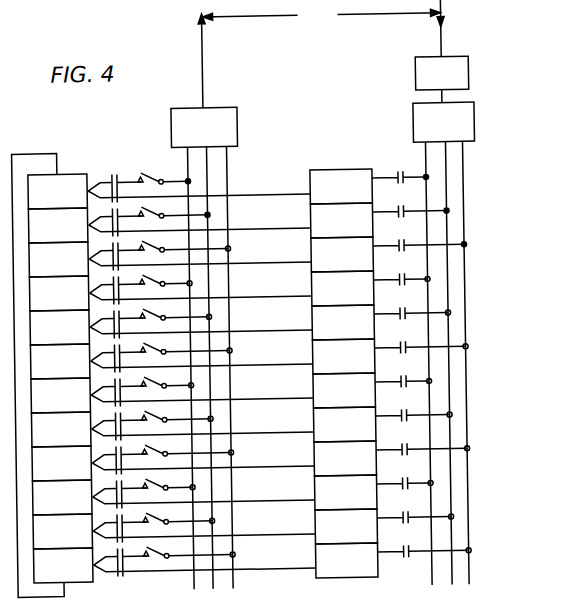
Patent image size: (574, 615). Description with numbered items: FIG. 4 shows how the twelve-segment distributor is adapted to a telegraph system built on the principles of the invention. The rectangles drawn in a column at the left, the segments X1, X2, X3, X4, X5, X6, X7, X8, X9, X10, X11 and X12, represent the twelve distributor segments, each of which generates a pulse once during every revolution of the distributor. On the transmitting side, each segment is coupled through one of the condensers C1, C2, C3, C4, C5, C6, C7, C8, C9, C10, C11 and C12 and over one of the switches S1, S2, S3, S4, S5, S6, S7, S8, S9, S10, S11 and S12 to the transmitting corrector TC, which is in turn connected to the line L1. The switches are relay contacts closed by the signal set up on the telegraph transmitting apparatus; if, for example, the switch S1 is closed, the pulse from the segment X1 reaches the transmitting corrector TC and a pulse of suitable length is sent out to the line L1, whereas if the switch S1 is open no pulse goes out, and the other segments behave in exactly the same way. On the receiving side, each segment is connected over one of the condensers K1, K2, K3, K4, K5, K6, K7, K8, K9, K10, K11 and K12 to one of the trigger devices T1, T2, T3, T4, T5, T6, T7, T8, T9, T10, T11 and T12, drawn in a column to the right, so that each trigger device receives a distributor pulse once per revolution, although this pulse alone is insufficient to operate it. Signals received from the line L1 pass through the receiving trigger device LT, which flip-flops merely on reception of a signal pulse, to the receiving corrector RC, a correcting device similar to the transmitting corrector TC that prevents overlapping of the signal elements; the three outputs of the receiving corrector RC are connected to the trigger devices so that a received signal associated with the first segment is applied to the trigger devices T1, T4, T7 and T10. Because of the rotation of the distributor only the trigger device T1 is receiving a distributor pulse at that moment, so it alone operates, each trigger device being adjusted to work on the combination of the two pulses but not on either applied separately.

The line L1 is at (321, 16).
The transmitting corrector TC is at (204, 127).
The receiving trigger device LT is at (441, 73).
The receiving corrector RC is at (444, 122).
The segment X1 is at (58, 191).
The segment X2 is at (58, 225).
The segment X3 is at (59, 259).
The segment X4 is at (59, 293).
The segment X5 is at (60, 327).
The segment X6 is at (60, 361).
The segment X7 is at (61, 395).
The segment X8 is at (61, 429).
The segment X9 is at (62, 463).
The segment X10 is at (62, 497).
The segment X11 is at (63, 531).
The segment X12 is at (63, 565).
The condenser C1 is at (126, 186).
The condenser C2 is at (126, 220).
The condenser C3 is at (127, 254).
The condenser C4 is at (127, 288).
The condenser C5 is at (128, 322).
The condenser C6 is at (128, 356).
The condenser C7 is at (129, 390).
The condenser C8 is at (129, 424).
The condenser C9 is at (130, 458).
The condenser C10 is at (130, 492).
The condenser C11 is at (131, 526).
The condenser C12 is at (131, 560).
The condenser K1 is at (199, 189).
The condenser K2 is at (200, 223).
The condenser K3 is at (200, 257).
The condenser K4 is at (201, 291).
The condenser K5 is at (201, 325).
The condenser K6 is at (202, 359).
The condenser K7 is at (202, 393).
The condenser K8 is at (203, 427).
The condenser K9 is at (203, 461).
The condenser K10 is at (204, 495).
The condenser K11 is at (204, 529).
The condenser K12 is at (205, 563).
The switch S1 is at (164, 175).
The switch S2 is at (174, 210).
The switch S3 is at (185, 243).
The switch S4 is at (165, 277).
The switch S5 is at (176, 312).
The switch S6 is at (186, 345).
The switch S7 is at (167, 379).
The switch S8 is at (177, 414).
The switch S9 is at (188, 447).
The switch S10 is at (168, 481).
The switch S11 is at (179, 516).
The switch S12 is at (189, 549).
The trigger device T1 is at (369, 186).
The trigger device T2 is at (379, 220).
The trigger device T3 is at (389, 253).
The trigger device T4 is at (370, 288).
The trigger device T5 is at (381, 322).
The trigger device T6 is at (390, 355).
The trigger device T7 is at (372, 390).
The trigger device T8 is at (382, 424).
The trigger device T9 is at (392, 457).
The trigger device T10 is at (373, 492).
The trigger device T11 is at (384, 526).
The trigger device T12 is at (393, 559).